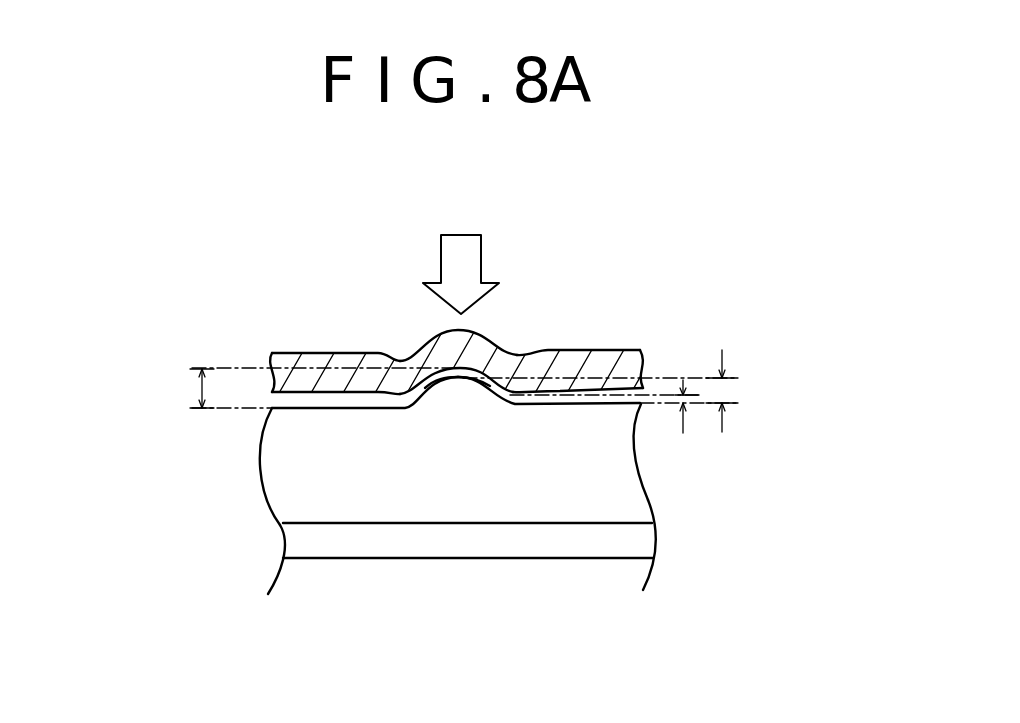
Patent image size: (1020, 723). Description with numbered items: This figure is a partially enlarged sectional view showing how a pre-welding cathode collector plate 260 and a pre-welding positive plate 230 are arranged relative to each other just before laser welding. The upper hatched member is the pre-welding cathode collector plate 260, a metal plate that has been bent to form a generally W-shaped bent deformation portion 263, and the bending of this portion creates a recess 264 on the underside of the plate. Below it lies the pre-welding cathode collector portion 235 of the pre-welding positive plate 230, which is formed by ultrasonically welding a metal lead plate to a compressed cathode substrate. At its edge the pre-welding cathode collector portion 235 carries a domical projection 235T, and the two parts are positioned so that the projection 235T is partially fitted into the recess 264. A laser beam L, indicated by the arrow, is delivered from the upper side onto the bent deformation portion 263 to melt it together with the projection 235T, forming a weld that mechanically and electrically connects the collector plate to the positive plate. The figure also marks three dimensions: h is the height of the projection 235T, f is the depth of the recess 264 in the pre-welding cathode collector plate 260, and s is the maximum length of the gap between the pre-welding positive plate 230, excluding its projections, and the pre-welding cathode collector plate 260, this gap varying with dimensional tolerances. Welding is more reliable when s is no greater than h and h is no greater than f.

The pre-welding cathode collector plate 260 is at (643, 357).
The bent deformation portion 263 is at (478, 337).
The recess 264 is at (463, 367).
The pre-welding cathode collector portion 235 is at (583, 462).
The projection 235T is at (458, 385).
The pre-welding positive plate 230 is at (312, 577).
The laser beam L is at (465, 263).
The depth of recess f is at (195, 388).
The height of projection h is at (727, 391).
The maximum gap length s is at (688, 407).